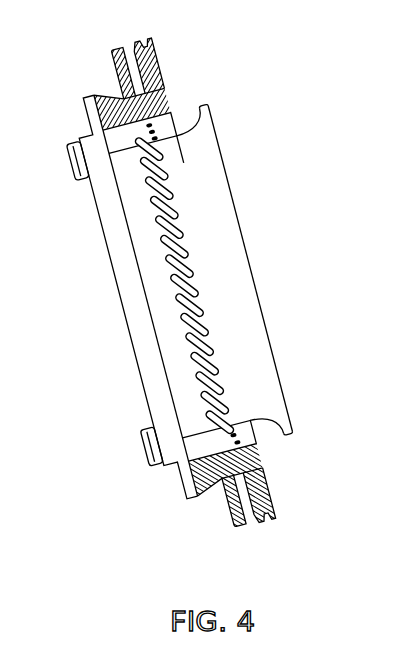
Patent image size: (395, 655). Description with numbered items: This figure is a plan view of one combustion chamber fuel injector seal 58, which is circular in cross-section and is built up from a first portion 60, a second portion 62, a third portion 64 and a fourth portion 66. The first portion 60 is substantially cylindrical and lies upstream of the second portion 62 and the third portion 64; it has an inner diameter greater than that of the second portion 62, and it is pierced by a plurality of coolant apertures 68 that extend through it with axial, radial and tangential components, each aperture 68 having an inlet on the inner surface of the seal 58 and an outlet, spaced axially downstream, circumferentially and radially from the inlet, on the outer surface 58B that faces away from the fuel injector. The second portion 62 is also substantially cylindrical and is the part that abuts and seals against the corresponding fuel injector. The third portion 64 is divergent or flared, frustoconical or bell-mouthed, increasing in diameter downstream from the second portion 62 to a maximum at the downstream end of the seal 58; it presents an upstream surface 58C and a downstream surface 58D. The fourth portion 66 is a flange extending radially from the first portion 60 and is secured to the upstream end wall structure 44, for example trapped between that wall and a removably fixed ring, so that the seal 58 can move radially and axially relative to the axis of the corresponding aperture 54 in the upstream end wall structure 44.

The upstream end wall structure 44 is at (290, 501).
The aperture 54 is at (248, 430).
The seal 58 is at (226, 243).
The outer surface 58B is at (183, 150).
The upstream surface 58C is at (195, 103).
The downstream surface 58D is at (240, 214).
The first portion 60 is at (121, 228).
The second portion 62 is at (187, 180).
The third portion 64 is at (214, 118).
The fourth portion 66 is at (83, 112).
The coolant apertures 68 is at (165, 248).